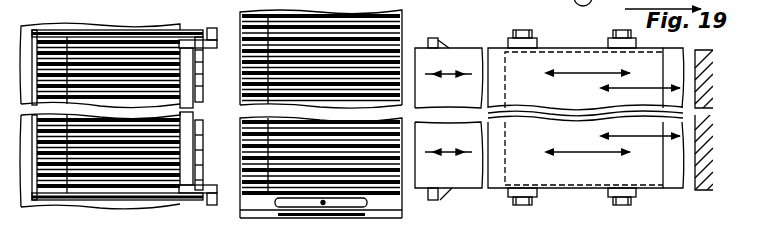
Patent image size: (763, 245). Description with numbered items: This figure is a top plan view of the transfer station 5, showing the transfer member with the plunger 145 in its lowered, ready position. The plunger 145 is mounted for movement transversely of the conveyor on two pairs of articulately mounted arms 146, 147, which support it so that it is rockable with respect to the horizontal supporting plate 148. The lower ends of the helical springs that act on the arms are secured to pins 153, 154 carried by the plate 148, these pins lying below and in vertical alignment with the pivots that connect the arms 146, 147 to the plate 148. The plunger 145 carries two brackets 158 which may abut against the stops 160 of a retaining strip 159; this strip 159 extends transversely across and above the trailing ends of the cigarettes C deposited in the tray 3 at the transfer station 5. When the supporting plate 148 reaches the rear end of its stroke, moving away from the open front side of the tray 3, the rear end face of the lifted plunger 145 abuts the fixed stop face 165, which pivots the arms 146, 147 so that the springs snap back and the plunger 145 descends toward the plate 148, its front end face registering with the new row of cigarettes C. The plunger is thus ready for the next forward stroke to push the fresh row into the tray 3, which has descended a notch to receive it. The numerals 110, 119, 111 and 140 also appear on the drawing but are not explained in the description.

The transfer station 5 is at (55, 19).
The tray 3 is at (113, 199).
The cigarettes C is at (168, 190).
The retaining strip 159 is at (190, 149).
The stops 160 is at (210, 28).
The guide rail 110 is at (277, 221).
The slot 119 is at (347, 203).
The rail strip 111 is at (393, 206).
The rail unit 140 is at (332, 22).
The plunger 145 is at (567, 175).
The arms 146 is at (508, 40).
The arms 147 is at (608, 40).
The supporting plate 148 is at (673, 187).
The pin 153 is at (485, 0).
The pin 154 is at (578, 0).
The brackets 158 is at (431, 38).
The fixed stop face 165 is at (693, 184).